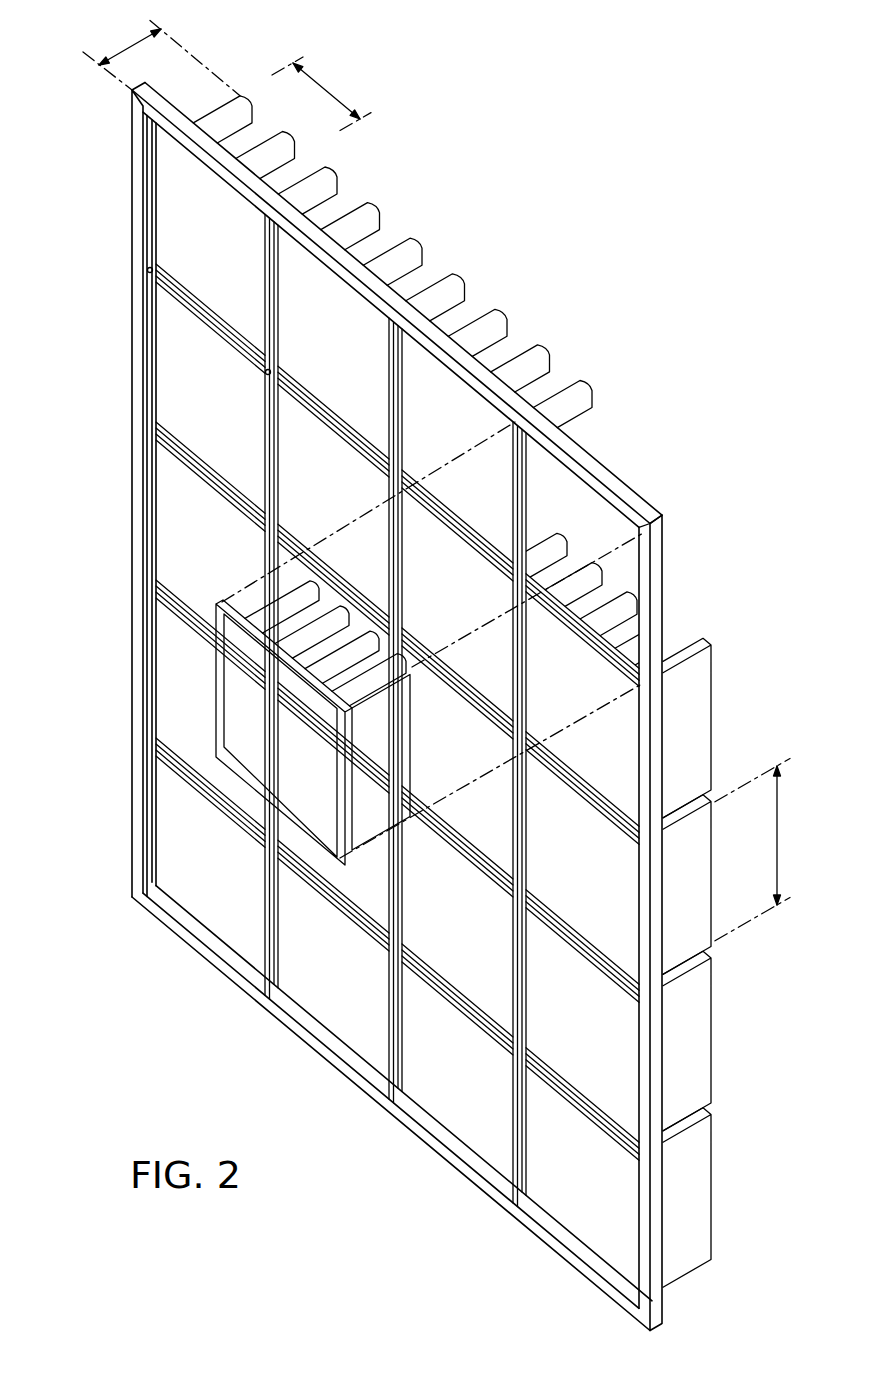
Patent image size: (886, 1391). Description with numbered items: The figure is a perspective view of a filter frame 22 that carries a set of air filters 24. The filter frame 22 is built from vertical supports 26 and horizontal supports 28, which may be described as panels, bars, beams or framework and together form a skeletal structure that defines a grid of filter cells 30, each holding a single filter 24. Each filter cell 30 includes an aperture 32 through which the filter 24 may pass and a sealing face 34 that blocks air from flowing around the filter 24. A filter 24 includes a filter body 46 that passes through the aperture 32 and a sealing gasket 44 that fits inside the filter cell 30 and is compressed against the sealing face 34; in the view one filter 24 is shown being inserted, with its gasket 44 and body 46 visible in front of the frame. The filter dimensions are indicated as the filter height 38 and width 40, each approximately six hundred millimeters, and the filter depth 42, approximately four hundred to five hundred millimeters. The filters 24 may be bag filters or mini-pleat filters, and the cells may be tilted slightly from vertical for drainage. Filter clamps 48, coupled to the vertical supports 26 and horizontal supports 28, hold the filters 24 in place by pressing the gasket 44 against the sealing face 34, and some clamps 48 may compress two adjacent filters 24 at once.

The filter frame 22 is at (655, 1318).
The air filter 24 is at (698, 1080).
The vertical supports 26 is at (283, 942).
The horizontal supports 28 is at (205, 787).
The filter cell 30 is at (658, 474).
The aperture 32 is at (607, 520).
The sealing face 34 is at (528, 462).
The filter height 38 is at (779, 838).
The filter width 40 is at (335, 98).
The filter depth 42 is at (128, 45).
The sealing gasket 44 is at (216, 708).
The filter body 46 is at (400, 760).
The filter clamps 48 is at (156, 270).